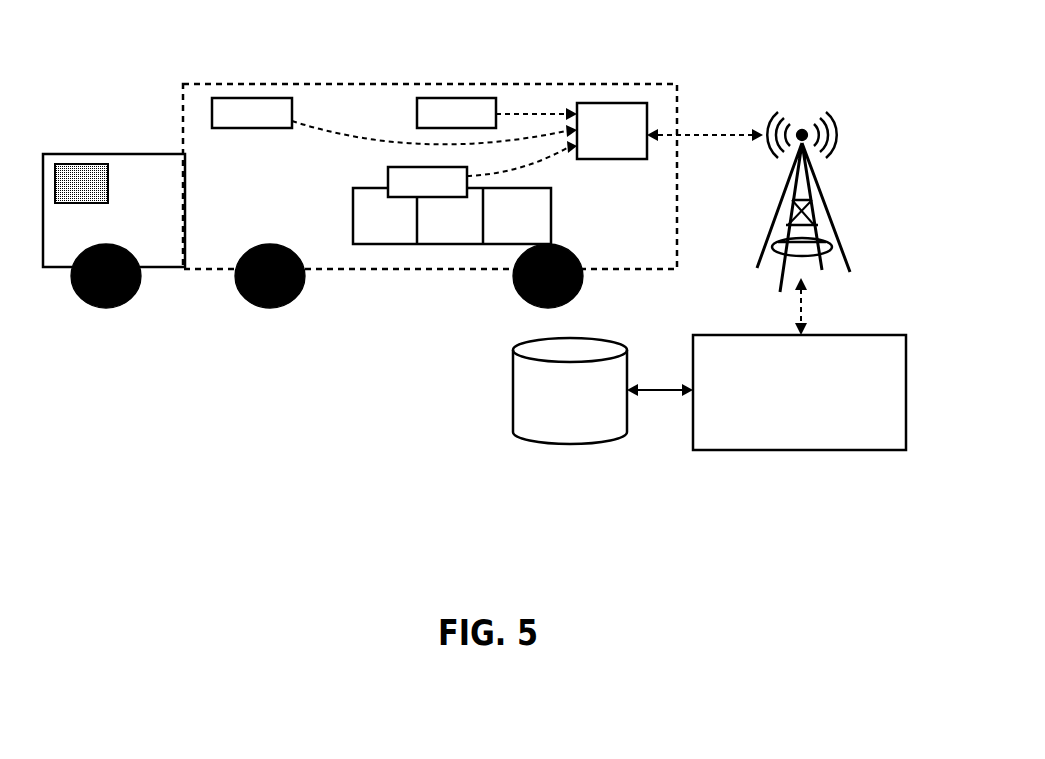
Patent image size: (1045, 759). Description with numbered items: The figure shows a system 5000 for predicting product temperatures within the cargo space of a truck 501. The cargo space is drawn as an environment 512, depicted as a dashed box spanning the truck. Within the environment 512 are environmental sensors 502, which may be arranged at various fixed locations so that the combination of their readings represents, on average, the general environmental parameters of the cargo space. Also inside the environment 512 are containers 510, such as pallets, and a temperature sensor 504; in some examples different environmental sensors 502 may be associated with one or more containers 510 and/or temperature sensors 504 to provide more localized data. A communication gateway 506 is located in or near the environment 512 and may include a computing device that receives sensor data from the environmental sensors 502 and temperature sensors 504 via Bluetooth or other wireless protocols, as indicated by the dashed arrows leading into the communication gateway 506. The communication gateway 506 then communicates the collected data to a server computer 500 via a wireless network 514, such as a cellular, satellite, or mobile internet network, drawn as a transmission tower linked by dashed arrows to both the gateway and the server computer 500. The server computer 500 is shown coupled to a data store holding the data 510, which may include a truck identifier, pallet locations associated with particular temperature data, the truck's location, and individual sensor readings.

The system 5000 is at (487, 261).
The vehicle 501 is at (207, 293).
The environment 512 is at (594, 85).
The environmental sensors 502 is at (233, 124).
The temperature sensors 504 is at (408, 193).
The communication gateway 506 is at (593, 143).
The containers 510 is at (366, 229).
The wireless network 514 is at (812, 198).
The server computer 500 is at (777, 436).